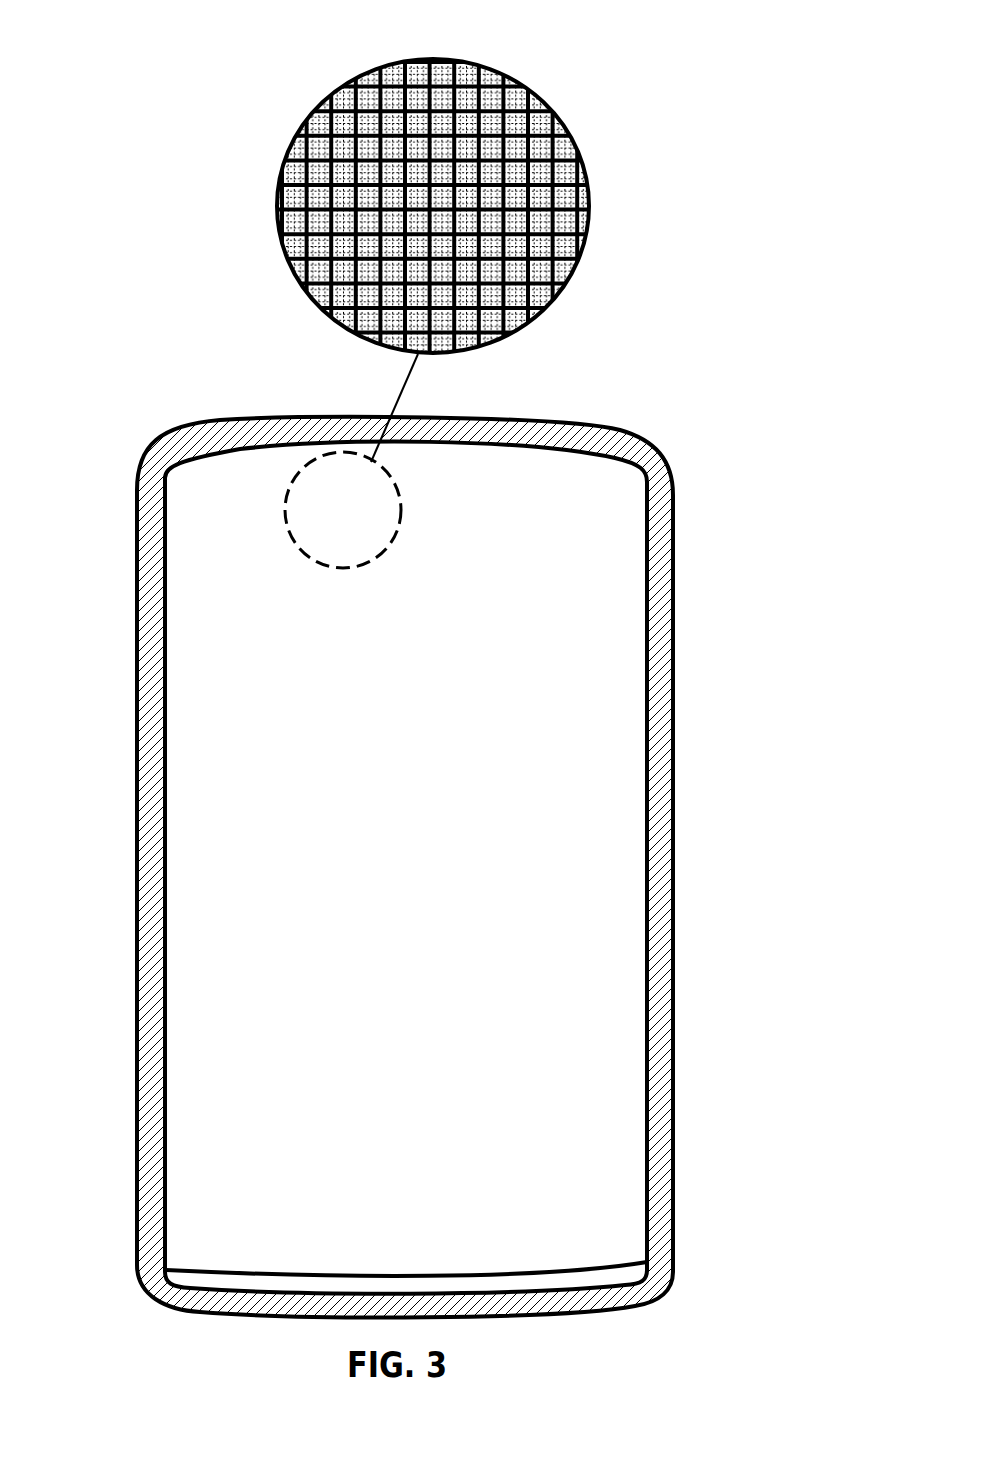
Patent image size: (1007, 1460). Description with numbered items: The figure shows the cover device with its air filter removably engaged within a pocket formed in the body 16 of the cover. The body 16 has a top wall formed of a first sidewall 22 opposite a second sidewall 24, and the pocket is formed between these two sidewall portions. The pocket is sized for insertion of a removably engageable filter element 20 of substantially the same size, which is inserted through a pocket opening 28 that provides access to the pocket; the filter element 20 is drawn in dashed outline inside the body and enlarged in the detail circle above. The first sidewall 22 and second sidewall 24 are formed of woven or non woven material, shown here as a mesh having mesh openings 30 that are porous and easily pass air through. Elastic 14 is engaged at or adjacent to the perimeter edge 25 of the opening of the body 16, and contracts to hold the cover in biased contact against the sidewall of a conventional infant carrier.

The elastic 14 is at (657, 647).
The body 16 is at (672, 478).
The filter element 20 is at (512, 130).
The first sidewall 22 is at (492, 70).
The second sidewall 24 is at (677, 968).
The perimeter edge 25 is at (137, 556).
The pocket opening 28 is at (622, 1268).
The mesh openings 30 is at (530, 180).